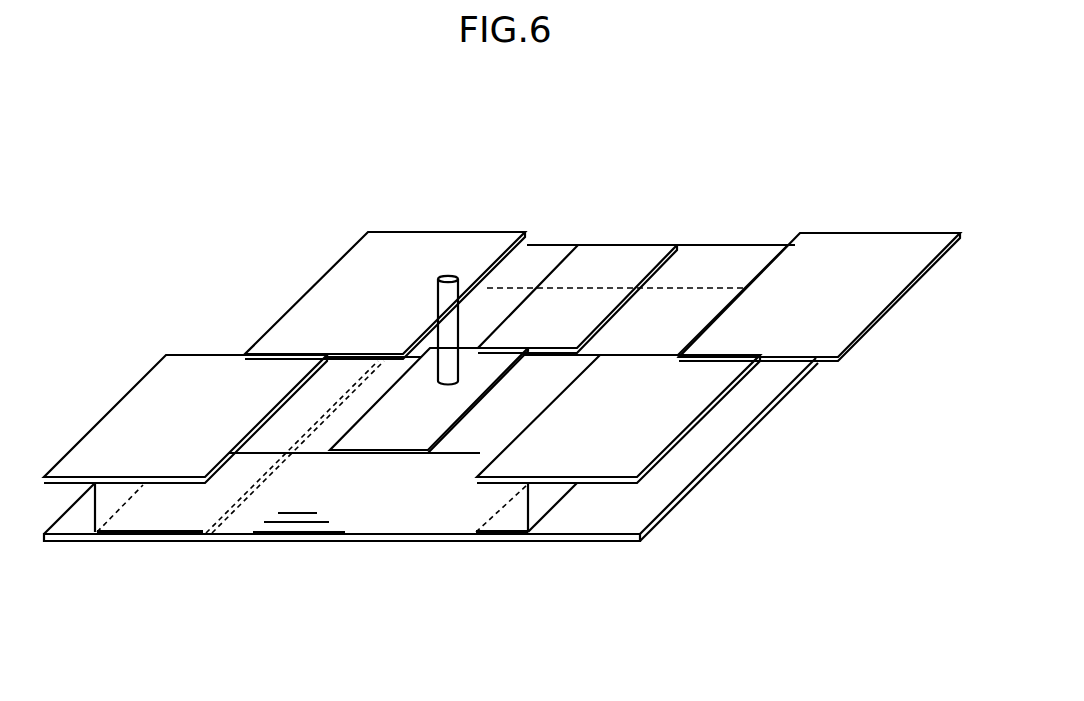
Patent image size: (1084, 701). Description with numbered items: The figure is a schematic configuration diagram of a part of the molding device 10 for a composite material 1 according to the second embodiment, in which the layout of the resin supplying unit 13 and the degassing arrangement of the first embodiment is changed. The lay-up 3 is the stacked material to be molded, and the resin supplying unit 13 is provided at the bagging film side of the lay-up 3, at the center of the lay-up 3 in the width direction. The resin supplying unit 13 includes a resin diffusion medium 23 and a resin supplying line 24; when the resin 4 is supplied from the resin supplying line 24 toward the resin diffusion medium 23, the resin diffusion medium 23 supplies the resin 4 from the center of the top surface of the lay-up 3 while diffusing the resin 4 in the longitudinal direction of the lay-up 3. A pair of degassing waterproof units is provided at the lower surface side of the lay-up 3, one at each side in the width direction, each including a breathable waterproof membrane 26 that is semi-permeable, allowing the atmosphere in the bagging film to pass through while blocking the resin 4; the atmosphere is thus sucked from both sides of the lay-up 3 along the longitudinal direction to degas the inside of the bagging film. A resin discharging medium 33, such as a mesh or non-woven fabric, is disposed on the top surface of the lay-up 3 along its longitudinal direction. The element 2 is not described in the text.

The composite material 1 is at (662, 163).
The substrate layer 2 is at (302, 530).
The lay-up 3 is at (688, 244).
The resin 4 is at (718, 257).
The molding device 10 is at (690, 571).
The resin supplying unit 13 is at (553, 175).
The resin diffusion medium 23 is at (613, 258).
The resin supplying line 24 is at (449, 276).
The breathable waterproof membrane 26 is at (82, 521).
The resin discharging medium 33 is at (396, 247).